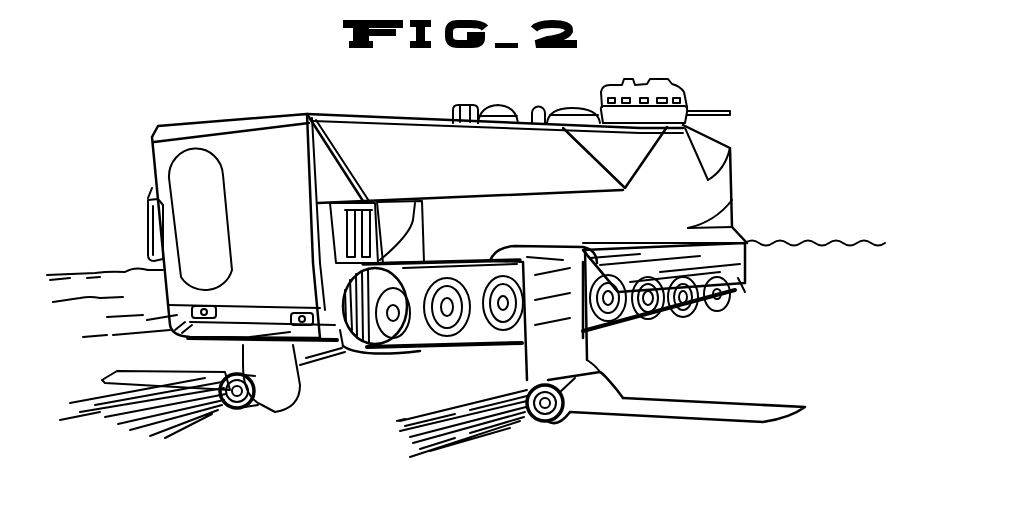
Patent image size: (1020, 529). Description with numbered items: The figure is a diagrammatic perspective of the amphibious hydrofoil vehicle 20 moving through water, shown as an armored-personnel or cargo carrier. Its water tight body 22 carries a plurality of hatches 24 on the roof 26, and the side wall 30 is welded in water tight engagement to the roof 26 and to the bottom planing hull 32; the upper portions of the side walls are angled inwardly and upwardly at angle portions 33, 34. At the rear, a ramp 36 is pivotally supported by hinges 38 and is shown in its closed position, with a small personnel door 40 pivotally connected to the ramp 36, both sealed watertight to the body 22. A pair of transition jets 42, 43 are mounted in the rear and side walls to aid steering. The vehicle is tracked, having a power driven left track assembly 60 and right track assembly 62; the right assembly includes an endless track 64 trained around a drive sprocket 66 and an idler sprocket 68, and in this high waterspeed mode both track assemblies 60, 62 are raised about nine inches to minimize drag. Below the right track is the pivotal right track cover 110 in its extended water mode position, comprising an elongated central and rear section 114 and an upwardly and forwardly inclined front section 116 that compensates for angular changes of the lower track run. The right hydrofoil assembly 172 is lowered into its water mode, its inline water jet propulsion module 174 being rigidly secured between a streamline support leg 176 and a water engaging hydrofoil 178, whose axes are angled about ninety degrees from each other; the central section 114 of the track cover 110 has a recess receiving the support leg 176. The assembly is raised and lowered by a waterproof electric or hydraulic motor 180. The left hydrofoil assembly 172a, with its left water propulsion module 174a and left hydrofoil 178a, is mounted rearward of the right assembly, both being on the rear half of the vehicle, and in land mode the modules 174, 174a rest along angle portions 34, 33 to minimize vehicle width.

The amphibious hydrofoil vehicle 20 is at (716, 72).
The water tight body 22 is at (736, 175).
The hatches 24 is at (607, 80).
The roof 26 is at (413, 120).
The side wall 30 is at (684, 192).
The bottom planing hull 32 is at (337, 340).
The angled upper portion of side wall 33 is at (152, 187).
The angled upper portion of side wall 34 is at (480, 168).
The ramp 36 is at (288, 225).
The hinges 38 is at (296, 310).
The personnel door 40 is at (193, 236).
The transition jet 42 is at (149, 211).
The transition jet 43 is at (358, 204).
The left track assembly 60 is at (178, 311).
The right track assembly 62 is at (447, 360).
The endless track 64 is at (445, 262).
The drive sprocket 66 is at (742, 285).
The idler sprocket 68 is at (363, 349).
The right track cover 110 is at (688, 331).
The central and rear section 114 is at (624, 332).
The front section 116 is at (727, 305).
The right hydrofoil assembly 172 is at (810, 402).
The left hydrofoil assembly 172a is at (180, 396).
The water jet propulsion module 174 is at (541, 424).
The left water propulsion module 174a is at (241, 415).
The support leg 176 is at (524, 364).
The hydrofoil 178 is at (670, 416).
The left hydrofoil 178a is at (136, 372).
The motor 180 is at (563, 244).